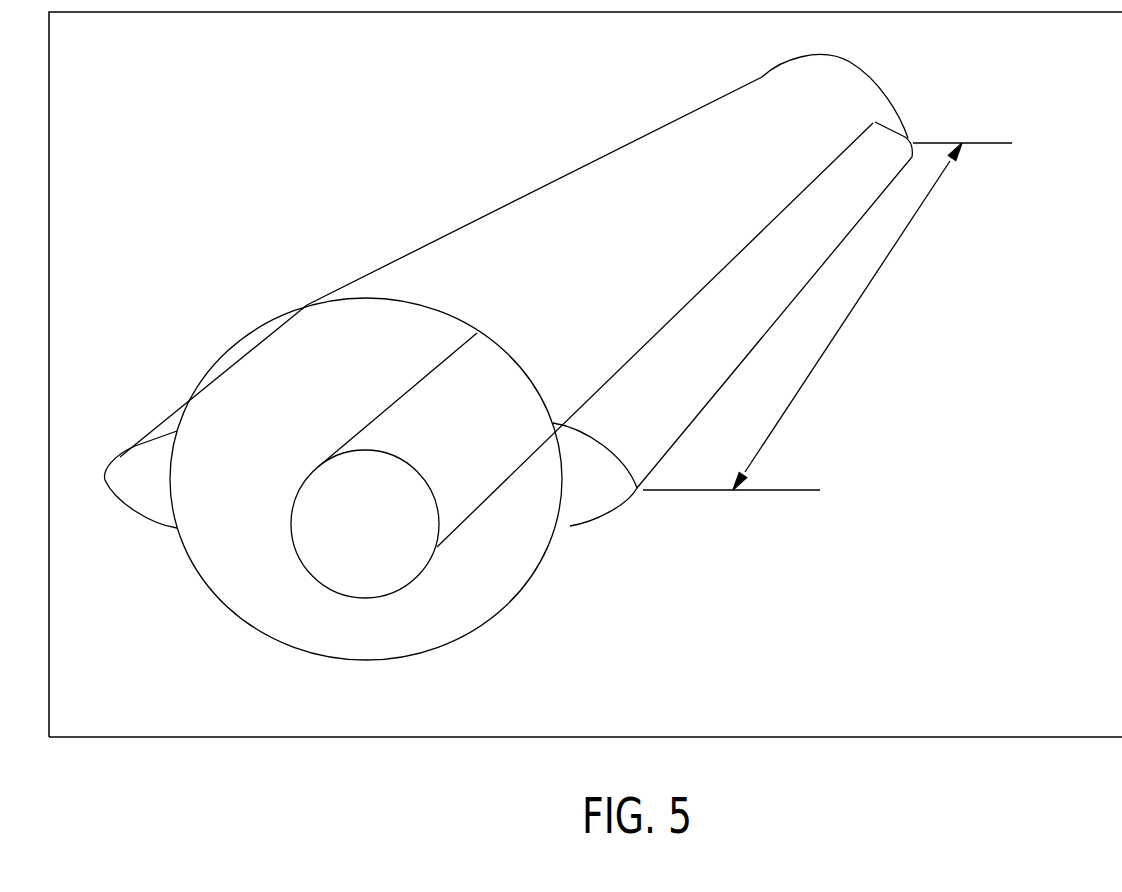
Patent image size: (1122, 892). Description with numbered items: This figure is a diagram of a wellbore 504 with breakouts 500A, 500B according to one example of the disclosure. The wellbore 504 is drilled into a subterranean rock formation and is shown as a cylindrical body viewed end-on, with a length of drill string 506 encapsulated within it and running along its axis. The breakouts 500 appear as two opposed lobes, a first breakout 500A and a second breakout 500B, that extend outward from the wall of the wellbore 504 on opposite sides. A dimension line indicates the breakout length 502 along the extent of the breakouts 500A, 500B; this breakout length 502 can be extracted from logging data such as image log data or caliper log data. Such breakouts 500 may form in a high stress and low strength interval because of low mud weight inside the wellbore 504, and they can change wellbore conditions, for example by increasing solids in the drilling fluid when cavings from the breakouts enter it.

The breakouts 500 is at (411, 362).
The breakout 500A is at (620, 507).
The breakout 500B is at (128, 449).
The breakout length 502 is at (882, 310).
The wellbore 504 is at (537, 580).
The drill string 506 is at (420, 583).